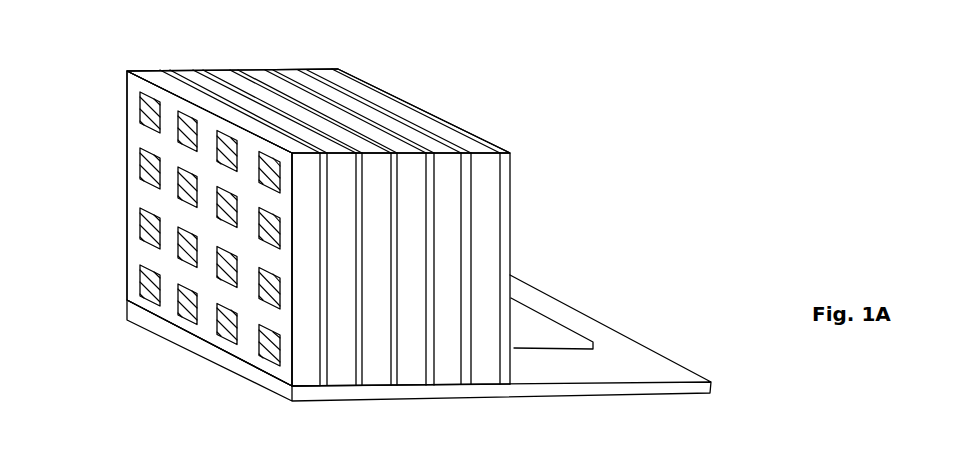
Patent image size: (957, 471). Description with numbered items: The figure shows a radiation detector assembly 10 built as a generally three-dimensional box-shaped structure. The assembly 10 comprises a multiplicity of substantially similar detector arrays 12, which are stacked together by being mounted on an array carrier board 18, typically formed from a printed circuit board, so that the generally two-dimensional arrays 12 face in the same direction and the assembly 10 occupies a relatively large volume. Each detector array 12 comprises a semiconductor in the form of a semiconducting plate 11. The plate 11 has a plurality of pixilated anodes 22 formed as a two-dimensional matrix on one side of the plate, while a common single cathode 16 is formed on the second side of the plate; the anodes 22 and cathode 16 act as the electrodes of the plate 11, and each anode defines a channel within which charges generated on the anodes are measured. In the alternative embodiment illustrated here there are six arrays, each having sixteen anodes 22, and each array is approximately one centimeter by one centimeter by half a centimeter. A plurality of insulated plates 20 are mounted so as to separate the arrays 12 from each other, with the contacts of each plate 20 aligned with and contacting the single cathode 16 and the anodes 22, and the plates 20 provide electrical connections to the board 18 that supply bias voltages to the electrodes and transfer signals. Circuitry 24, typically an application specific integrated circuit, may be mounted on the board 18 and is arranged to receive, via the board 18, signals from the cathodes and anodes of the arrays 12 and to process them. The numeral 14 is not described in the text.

The radiation detector assembly 10 is at (634, 170).
The semiconducting plate 11 is at (137, 70).
The detector array 12 is at (344, 80).
The side face 14 is at (138, 202).
The common single cathode 16 is at (318, 341).
The array carrier board 18 is at (700, 390).
The insulated plate 20 is at (473, 372).
The pixilated anode 22 is at (142, 112).
The circuitry 24 is at (553, 330).